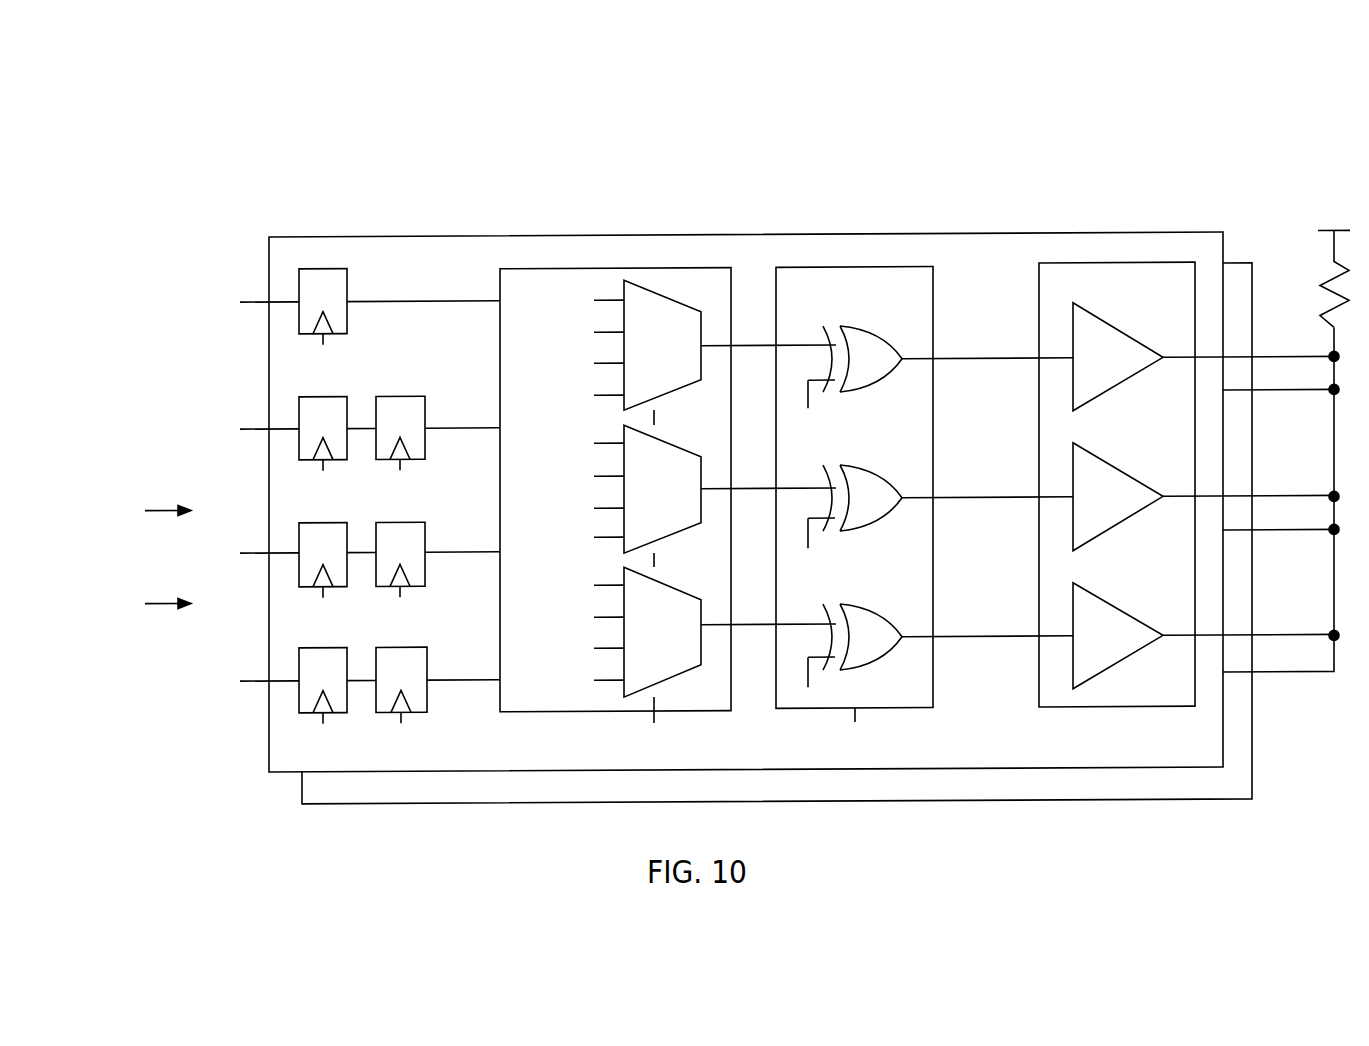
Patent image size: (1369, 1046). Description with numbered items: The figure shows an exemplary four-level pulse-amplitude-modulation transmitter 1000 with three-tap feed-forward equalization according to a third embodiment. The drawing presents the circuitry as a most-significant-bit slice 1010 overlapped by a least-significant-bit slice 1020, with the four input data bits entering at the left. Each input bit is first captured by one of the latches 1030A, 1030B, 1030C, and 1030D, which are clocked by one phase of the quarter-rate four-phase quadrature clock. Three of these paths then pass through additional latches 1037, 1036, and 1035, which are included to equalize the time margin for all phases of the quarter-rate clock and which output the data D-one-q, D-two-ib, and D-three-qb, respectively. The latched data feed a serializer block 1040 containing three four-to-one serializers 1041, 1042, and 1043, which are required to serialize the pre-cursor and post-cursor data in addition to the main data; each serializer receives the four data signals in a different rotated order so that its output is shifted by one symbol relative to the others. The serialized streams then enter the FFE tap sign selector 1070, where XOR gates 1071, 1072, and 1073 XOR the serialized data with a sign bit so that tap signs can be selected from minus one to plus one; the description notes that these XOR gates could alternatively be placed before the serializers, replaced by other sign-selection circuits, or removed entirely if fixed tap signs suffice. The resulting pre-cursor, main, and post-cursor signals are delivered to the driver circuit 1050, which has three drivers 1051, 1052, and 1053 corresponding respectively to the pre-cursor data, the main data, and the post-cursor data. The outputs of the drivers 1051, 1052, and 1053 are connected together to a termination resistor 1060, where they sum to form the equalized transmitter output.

The PAM-4 transmitter 1000 is at (812, 128).
The MSB slice 1010 is at (1223, 237).
The LSB slice 1020 is at (1252, 268).
The flip-flop for D0 1030A is at (299, 321).
The flip-flop for D1 1030B is at (299, 448).
The flip-flop for D2 1030C is at (299, 577).
The flip-flop for D3 1030D is at (299, 706).
The latch 1035 is at (375, 708).
The latch 1036 is at (393, 523).
The latch 1037 is at (393, 397).
The serializer block 1040 is at (612, 270).
The serializer 1041 is at (660, 297).
The serializer 1042 is at (660, 443).
The serializer 1043 is at (660, 583).
The driver circuit 1050 is at (1100, 267).
The driver 1051 is at (1118, 330).
The driver 1052 is at (1118, 470).
The driver 1053 is at (1118, 609).
The termination resistor 1060 is at (1303, 256).
The FFE tap sign selector 1070 is at (820, 270).
The XOR gate 1071 is at (857, 331).
The XOR gate 1072 is at (857, 470).
The XOR gate 1073 is at (857, 609).